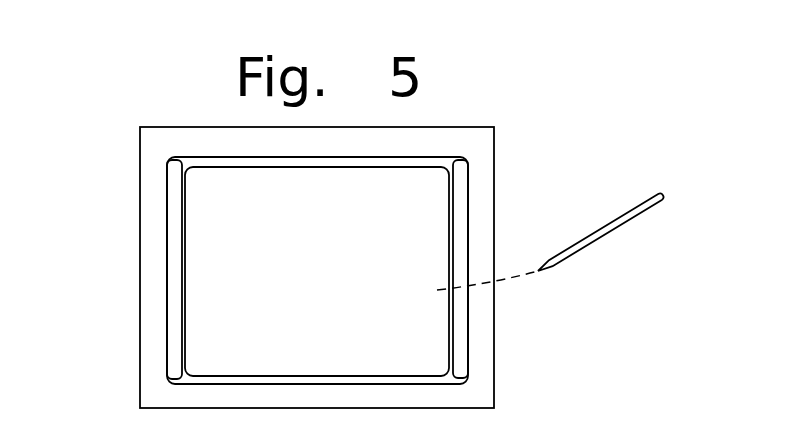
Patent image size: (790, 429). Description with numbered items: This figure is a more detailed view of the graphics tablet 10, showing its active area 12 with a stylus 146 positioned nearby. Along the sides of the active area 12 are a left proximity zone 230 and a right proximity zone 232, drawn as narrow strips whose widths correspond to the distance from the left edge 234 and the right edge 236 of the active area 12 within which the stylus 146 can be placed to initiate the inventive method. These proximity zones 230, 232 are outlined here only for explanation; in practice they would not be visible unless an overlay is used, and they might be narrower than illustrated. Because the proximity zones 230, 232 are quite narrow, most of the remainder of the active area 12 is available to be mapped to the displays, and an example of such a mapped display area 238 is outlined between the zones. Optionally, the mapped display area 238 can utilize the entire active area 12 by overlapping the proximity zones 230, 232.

The graphics tablet 10 is at (548, 178).
The active area 12 is at (200, 158).
The stylus 146 is at (612, 222).
The left proximity zone 230 is at (176, 250).
The right proximity zone 232 is at (459, 360).
The left edge 234 is at (168, 322).
The right edge 236 is at (468, 322).
The mapped display area 238 is at (353, 266).